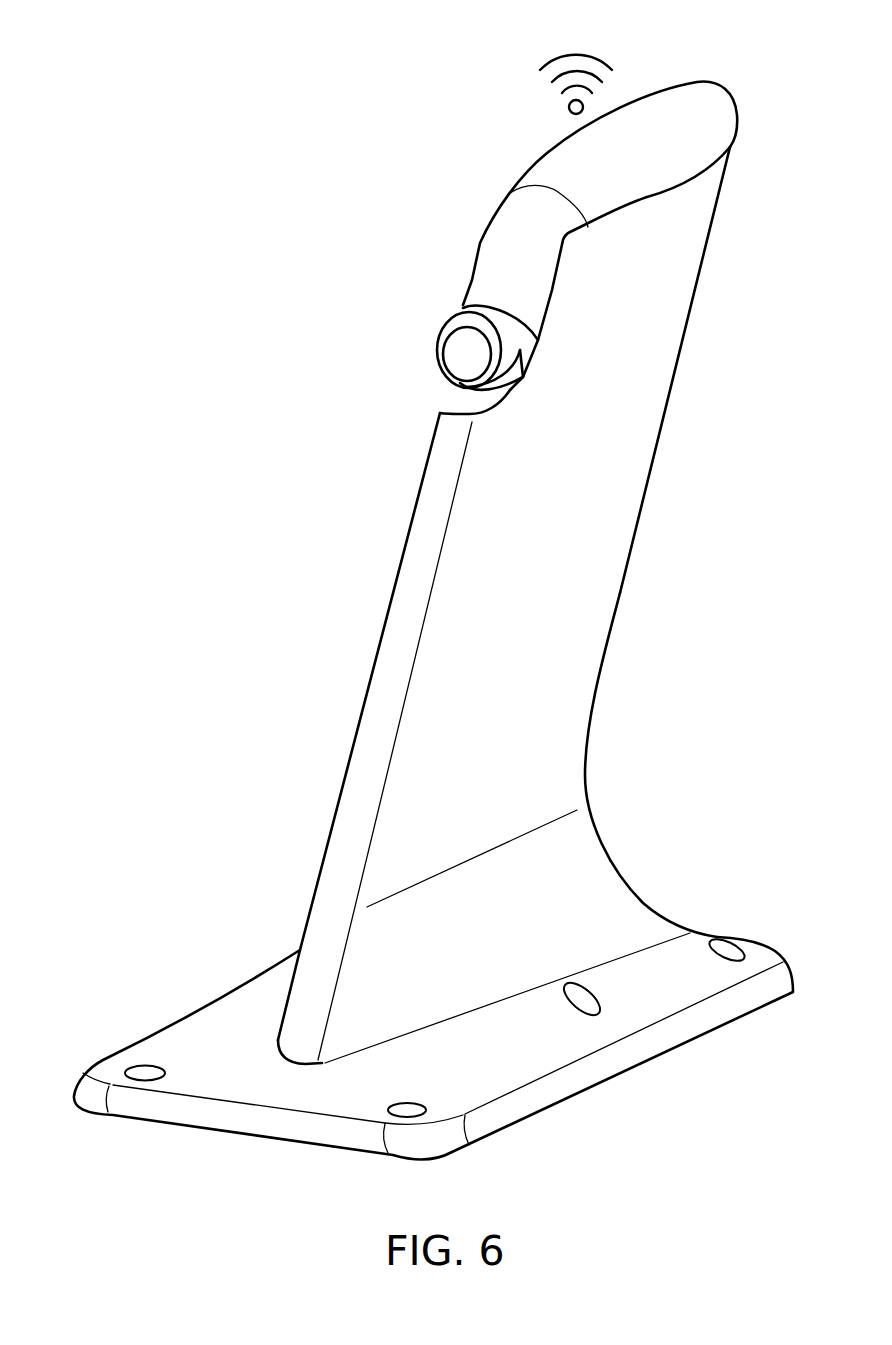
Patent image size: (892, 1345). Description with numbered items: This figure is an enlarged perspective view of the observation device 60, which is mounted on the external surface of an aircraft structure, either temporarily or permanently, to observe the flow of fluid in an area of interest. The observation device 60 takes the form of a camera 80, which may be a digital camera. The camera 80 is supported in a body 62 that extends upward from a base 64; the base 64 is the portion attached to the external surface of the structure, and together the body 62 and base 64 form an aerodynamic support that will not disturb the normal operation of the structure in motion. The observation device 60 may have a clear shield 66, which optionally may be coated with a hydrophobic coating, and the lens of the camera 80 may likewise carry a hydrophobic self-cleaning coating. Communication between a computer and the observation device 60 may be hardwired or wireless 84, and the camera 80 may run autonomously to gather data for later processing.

The observation device 60 is at (433, 621).
The body 62 is at (600, 582).
The base 64 is at (585, 868).
The clear shield 66 is at (448, 348).
The camera 80 is at (423, 307).
The wireless communication 84 is at (547, 70).